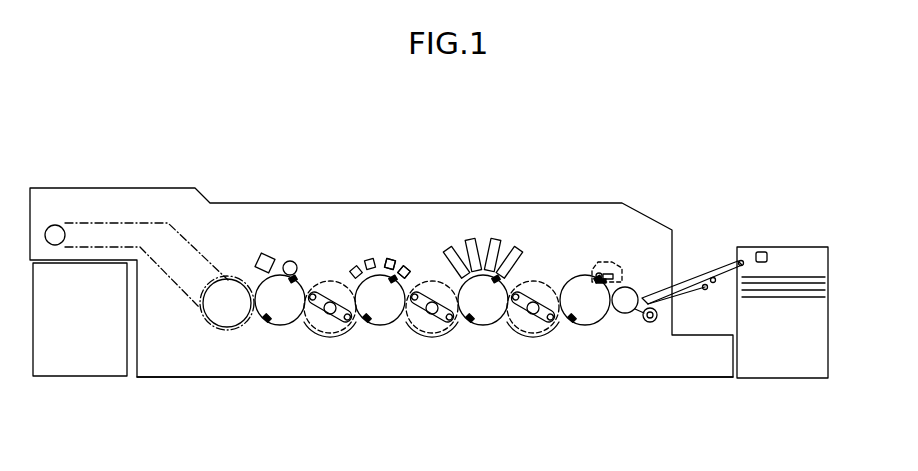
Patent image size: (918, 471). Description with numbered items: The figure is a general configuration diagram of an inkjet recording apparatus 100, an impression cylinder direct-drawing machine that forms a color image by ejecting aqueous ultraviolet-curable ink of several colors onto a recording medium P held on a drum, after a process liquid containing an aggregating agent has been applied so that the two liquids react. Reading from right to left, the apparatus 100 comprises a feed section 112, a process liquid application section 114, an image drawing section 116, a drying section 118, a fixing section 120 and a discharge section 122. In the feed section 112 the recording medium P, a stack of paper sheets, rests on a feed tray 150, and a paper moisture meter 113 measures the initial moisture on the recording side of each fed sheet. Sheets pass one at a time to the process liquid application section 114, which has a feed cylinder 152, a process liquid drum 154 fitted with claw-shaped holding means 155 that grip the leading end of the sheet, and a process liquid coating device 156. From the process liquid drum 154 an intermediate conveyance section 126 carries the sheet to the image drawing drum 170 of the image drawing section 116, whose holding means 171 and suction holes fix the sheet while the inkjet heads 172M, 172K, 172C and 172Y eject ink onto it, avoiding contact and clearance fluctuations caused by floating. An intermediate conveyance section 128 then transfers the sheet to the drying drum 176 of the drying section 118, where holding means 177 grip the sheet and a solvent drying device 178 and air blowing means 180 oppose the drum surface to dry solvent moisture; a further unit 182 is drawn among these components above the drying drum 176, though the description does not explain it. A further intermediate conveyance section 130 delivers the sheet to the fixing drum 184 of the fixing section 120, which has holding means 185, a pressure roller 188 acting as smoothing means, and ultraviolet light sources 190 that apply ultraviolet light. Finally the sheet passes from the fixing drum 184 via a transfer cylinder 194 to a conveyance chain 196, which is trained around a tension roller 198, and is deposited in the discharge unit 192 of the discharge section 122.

The inkjet recording apparatus 100 is at (620, 145).
The feed section 112 is at (748, 382).
The paper moisture meter 113 is at (762, 250).
The recording medium P is at (775, 302).
The process liquid application section 114 is at (575, 325).
The image drawing section 116 is at (473, 325).
The drying section 118 is at (370, 325).
The fixing section 120 is at (268, 325).
The discharge section 122 is at (105, 382).
The intermediate conveyance section 126 is at (522, 333).
The intermediate conveyance section 128 is at (420, 333).
The intermediate conveyance section 130 is at (316, 333).
The feed tray 150 is at (712, 278).
The feed cylinder 152 is at (627, 313).
The process liquid drum 154 is at (590, 322).
The holding means 155 is at (572, 322).
The process liquid coating device 156 is at (604, 258).
The image drawing drum 170 is at (485, 322).
The holding means 171 is at (470, 322).
The inkjet head 172Y is at (452, 245).
The inkjet head 172C is at (471, 240).
The inkjet head 172K is at (494, 240).
The inkjet head 172M is at (512, 248).
The drying drum 176 is at (382, 322).
The holding means 177 is at (367, 322).
The solvent drying device 178 is at (376, 256).
The air blowing means 180 is at (407, 267).
The charger 182 is at (390, 259).
The fixing drum 184 is at (280, 322).
The holding means 185 is at (265, 322).
The pressure roller 188 is at (291, 260).
The ultraviolet light source 190 is at (258, 253).
The discharge unit 192 is at (63, 378).
The transfer cylinder 194 is at (203, 318).
The conveyance chain 196 is at (100, 222).
The tension roller 198 is at (57, 219).